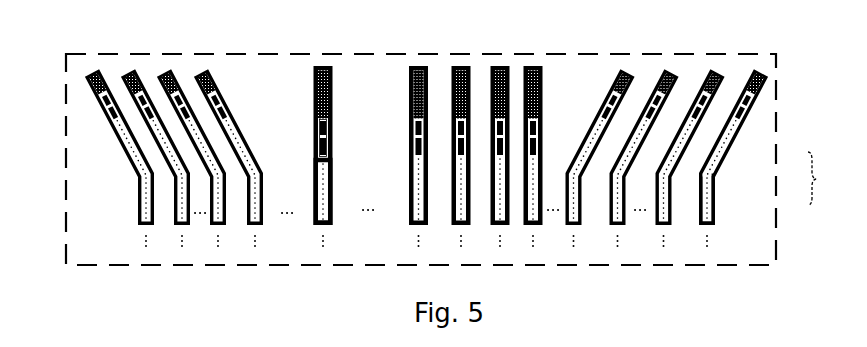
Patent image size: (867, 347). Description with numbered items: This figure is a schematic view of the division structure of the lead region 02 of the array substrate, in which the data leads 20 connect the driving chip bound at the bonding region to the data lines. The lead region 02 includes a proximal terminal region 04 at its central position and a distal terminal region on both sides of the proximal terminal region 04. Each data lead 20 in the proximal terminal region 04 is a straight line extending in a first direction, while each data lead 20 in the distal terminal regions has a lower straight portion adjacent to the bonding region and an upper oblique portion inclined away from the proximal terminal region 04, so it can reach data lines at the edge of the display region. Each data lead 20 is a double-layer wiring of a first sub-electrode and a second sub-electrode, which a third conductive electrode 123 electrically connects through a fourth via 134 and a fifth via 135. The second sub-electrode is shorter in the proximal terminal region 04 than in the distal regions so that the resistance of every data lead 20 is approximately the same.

The lead region 02 is at (757, 115).
The proximal terminal region 04 is at (540, 47).
The data lead 20 is at (823, 178).
The third conductive electrode 123 is at (318, 128).
The fourth via 134 is at (328, 127).
The fifth via 135 is at (328, 146).